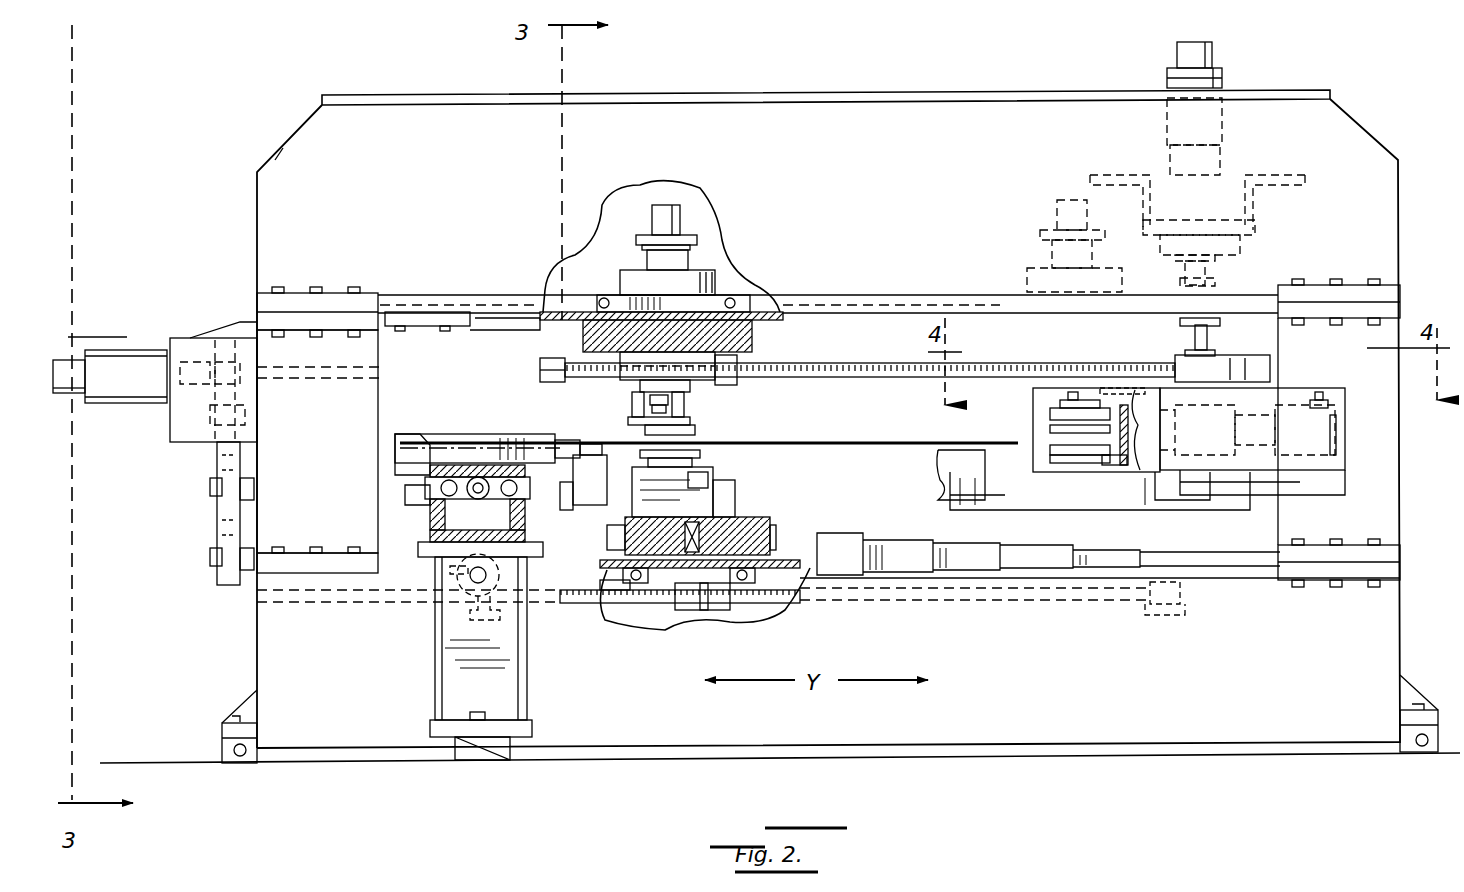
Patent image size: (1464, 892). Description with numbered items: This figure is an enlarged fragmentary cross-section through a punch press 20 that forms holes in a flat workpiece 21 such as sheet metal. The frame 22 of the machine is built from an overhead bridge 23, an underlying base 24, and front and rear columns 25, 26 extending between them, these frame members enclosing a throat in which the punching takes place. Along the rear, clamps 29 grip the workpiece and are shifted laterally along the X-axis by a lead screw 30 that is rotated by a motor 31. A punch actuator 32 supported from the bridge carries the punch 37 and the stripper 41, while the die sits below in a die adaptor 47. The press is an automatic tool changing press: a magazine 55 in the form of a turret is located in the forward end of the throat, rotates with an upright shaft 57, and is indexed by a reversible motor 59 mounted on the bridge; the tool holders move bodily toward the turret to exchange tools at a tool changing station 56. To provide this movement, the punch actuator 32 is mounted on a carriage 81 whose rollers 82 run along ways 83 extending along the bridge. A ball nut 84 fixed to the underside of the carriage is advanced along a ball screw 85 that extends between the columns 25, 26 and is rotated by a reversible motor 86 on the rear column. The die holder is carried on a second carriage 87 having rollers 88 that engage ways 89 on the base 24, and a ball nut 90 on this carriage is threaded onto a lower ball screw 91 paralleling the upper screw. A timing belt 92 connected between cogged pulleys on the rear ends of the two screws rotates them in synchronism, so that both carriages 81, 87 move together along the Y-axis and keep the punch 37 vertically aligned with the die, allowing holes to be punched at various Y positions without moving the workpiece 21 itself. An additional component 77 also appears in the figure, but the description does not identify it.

The punch press 20 is at (192, 186).
The workpiece 21 is at (830, 443).
The frame 22 is at (286, 156).
The bridge 23 is at (818, 104).
The base 24 is at (1048, 745).
The front column 25 is at (1378, 497).
The rear column 26 is at (272, 450).
The clamps 29 is at (546, 420).
The lead screw 30 is at (432, 490).
The motor 31 is at (462, 600).
The punch actuator 32 is at (702, 270).
The punch 37 is at (690, 405).
The stripper 41 is at (708, 436).
The die adaptor 47 is at (708, 456).
The magazine 55 is at (1120, 458).
The tool changing station 56 is at (1030, 410).
The upright shaft 57 is at (1192, 345).
The reversible motor 59 is at (1227, 86).
The slide 77 is at (1292, 397).
The carriage 81 is at (755, 342).
The rollers 82 is at (605, 298).
The ways 83 is at (548, 300).
The ball nut 84 is at (732, 382).
The ball screw 85 is at (640, 380).
The reversible motor 86 is at (138, 407).
The second carriage 87 is at (735, 517).
The rollers 88 is at (695, 553).
The ways 89 is at (817, 535).
The ball nut 90 is at (680, 620).
The lower ball screw 91 is at (658, 603).
The timing belt 92 is at (222, 522).